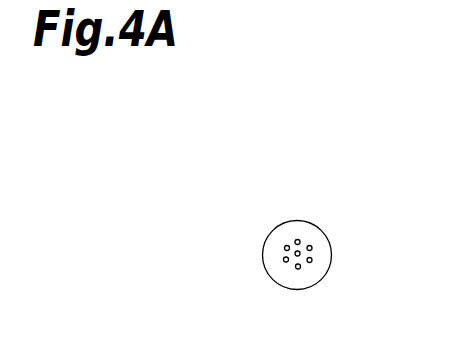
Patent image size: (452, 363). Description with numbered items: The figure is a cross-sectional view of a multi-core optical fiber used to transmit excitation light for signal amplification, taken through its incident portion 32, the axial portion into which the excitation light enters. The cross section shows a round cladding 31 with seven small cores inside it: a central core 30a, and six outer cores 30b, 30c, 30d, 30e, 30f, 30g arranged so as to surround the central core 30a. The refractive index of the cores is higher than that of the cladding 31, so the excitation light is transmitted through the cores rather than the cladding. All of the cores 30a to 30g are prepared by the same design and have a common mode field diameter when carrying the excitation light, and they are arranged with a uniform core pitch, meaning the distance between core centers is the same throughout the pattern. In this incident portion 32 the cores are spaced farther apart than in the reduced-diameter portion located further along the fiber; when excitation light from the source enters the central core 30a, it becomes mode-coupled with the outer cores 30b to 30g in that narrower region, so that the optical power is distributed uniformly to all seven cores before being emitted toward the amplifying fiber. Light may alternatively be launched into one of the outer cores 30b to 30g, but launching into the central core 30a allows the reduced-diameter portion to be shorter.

The cladding 31 is at (271, 243).
The incident portion 32 is at (313, 222).
The central core 30a is at (284, 258).
The outer core 30b is at (300, 240).
The outer core 30c is at (312, 247).
The outer core 30d is at (313, 261).
The outer core 30e is at (300, 270).
The outer core 30f is at (296, 256).
The outer core 30g is at (287, 245).